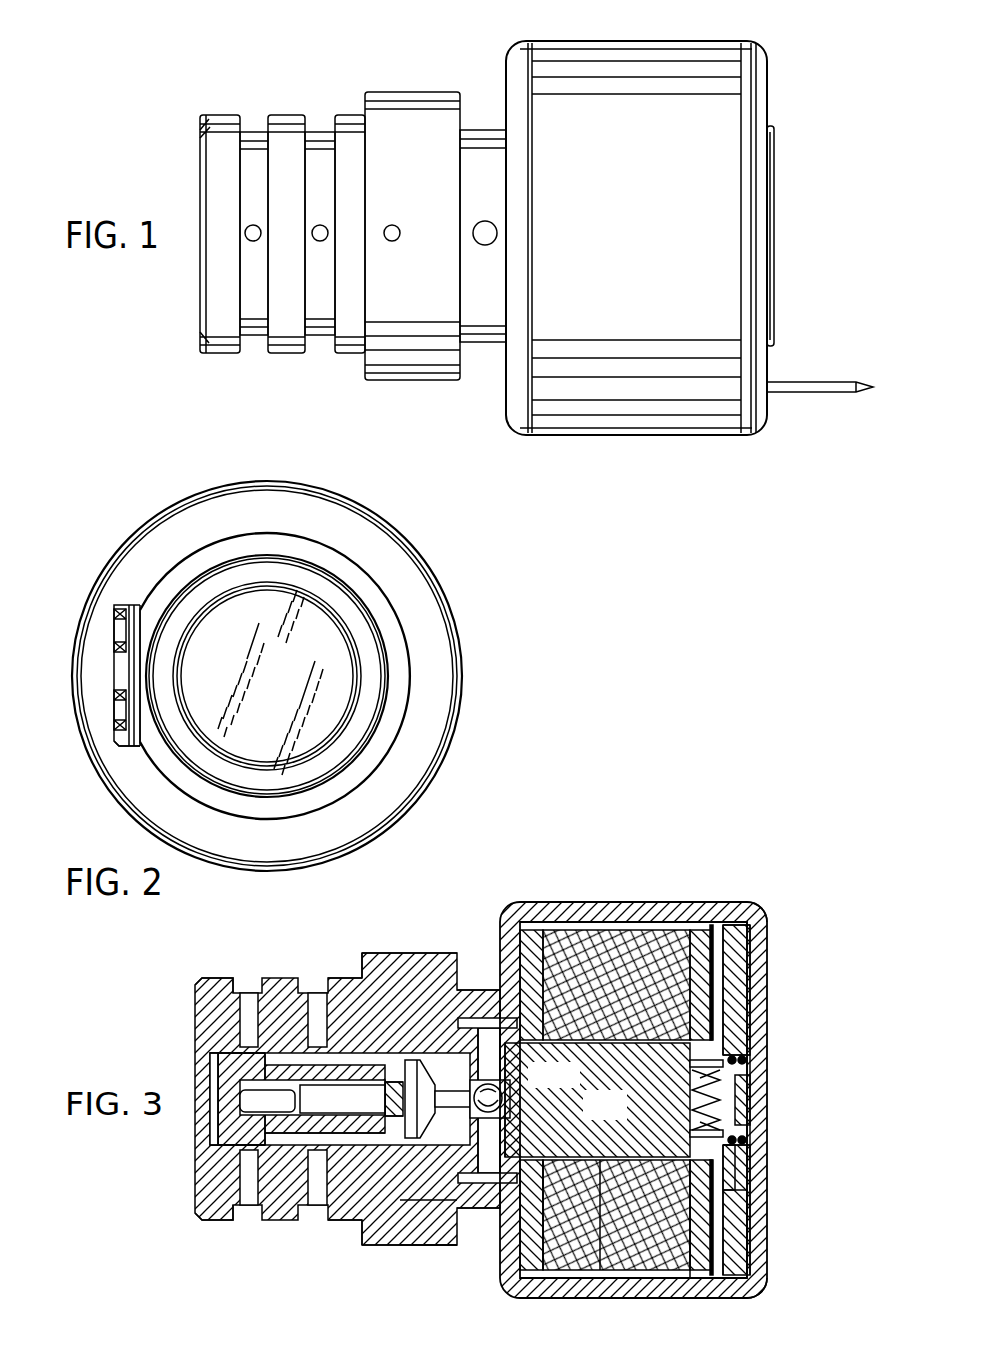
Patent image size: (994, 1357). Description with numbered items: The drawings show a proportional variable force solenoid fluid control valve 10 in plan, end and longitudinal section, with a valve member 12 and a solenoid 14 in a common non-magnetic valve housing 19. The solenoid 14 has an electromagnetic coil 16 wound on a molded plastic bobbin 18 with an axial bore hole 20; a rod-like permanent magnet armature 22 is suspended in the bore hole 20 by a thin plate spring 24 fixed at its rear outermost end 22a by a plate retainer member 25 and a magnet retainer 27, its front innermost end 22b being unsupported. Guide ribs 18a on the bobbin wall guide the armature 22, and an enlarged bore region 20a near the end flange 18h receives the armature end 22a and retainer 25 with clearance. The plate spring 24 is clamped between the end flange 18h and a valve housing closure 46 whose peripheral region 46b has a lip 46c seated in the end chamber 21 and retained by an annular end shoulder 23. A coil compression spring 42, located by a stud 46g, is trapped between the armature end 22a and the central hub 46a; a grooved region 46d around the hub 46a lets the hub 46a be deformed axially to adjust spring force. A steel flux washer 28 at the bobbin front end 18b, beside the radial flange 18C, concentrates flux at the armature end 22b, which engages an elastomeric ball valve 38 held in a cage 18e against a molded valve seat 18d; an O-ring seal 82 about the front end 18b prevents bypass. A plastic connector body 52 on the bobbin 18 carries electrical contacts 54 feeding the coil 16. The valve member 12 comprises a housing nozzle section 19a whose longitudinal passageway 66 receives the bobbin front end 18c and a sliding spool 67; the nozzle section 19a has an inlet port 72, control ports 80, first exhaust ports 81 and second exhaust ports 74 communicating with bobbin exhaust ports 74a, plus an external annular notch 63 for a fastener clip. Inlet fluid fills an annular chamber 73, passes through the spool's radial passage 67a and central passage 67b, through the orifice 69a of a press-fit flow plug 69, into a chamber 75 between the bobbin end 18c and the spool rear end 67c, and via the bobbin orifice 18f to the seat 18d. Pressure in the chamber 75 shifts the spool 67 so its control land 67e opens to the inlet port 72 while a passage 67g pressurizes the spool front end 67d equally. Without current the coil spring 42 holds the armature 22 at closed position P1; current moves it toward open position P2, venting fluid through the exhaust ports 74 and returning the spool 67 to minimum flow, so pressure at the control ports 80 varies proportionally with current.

In FIG. 1, the proportional variable force solenoid fluid control valve 10 is at (472, 442).
In FIG. 3, the proportional variable force solenoid fluid control valve 10 is at (498, 868).
In FIG. 1, the valve member 12 is at (343, 100).
In FIG. 3, the valve member 12 is at (213, 1148).
In FIG. 1, the solenoid 14 is at (597, 36).
In FIG. 3, the solenoid 14 is at (618, 896).
In FIG. 3, the electromagnetic coil 16 is at (640, 1010).
In FIG. 3, the bobbin 18 is at (768, 995).
In FIG. 3, the armature guide ribs 18a is at (507, 1212).
In FIG. 3, the front end of the bobbin 18b is at (548, 990).
In FIG. 3, the front end of the bobbin 18c is at (400, 1180).
In FIG. 3, the radial flange of the bobbin 18C is at (492, 1012).
In FIG. 3, the valve seat 18d is at (470, 1180).
In FIG. 3, the cage 18e is at (512, 1078).
In FIG. 3, the orifice of the bobbin 18f is at (410, 1010).
In FIG. 3, the end flange of the bobbin 18h is at (722, 1280).
In FIG. 1, the valve housing 19 is at (673, 429).
In FIG. 2, the valve housing 19 is at (444, 582).
In FIG. 3, the valve housing 19 is at (428, 944).
In FIG. 1, the housing nozzle section 19a is at (240, 116).
In FIG. 3, the housing nozzle section 19a is at (213, 1224).
In FIG. 3, the bore hole 20 is at (585, 1010).
In FIG. 3, the enlarged bore region 20a is at (748, 1040).
In FIG. 3, the end chamber 21 is at (710, 1272).
In FIG. 3, the permanent magnet armature 22 is at (588, 1120).
In FIG. 3, the outermost end of the armature 22a is at (712, 1112).
In FIG. 3, the innermost end of the armature 22b is at (490, 1185).
In FIG. 2, the annular end shoulder 23 is at (418, 643).
In FIG. 3, the annular end shoulder 23 is at (752, 990).
In FIG. 3, the plate spring 24 is at (718, 1225).
In FIG. 3, the plate retainer member 25 is at (745, 1190).
In FIG. 3, the magnet retainer 27 is at (718, 1132).
In FIG. 3, the flux washer 28 is at (522, 1030).
In FIG. 3, the ball valve 38 is at (438, 1062).
In FIG. 3, the coil compression spring 42 is at (716, 1112).
In FIG. 1, the valve housing closure 46 is at (779, 154).
In FIG. 2, the valve housing closure 46 is at (332, 703).
In FIG. 3, the valve housing closure 46 is at (790, 1038).
In FIG. 1, the central hub 46a is at (776, 241).
In FIG. 2, the central hub 46a is at (268, 674).
In FIG. 3, the central hub 46a is at (752, 1095).
In FIG. 3, the peripheral region 46b is at (742, 960).
In FIG. 3, the lip 46c is at (745, 935).
In FIG. 2, the grooved region 46d is at (372, 678).
In FIG. 3, the grooved region 46d is at (748, 1000).
In FIG. 3, the spring locating stud 46g is at (752, 1072).
In FIG. 2, the connector body 52 is at (106, 722).
In FIG. 1, the electrical contacts 54 is at (805, 392).
In FIG. 2, the electrical contacts 54 is at (118, 710).
In FIG. 1, the annular notch 63 is at (478, 365).
In FIG. 3, the longitudinal passageway 66 is at (214, 1055).
In FIG. 3, the spool 67 is at (232, 1130).
In FIG. 3, the radial fluid passage 67a is at (214, 1190).
In FIG. 3, the longitudinal central passage 67b is at (318, 1112).
In FIG. 3, the rear end of the spool 67c is at (380, 1068).
In FIG. 3, the front end of the spool 67d is at (232, 1068).
In FIG. 3, the annular spool control land 67e is at (310, 1180).
In FIG. 3, the passage 67g is at (215, 1056).
In FIG. 3, the flow plug 69 is at (398, 1080).
In FIG. 3, the orifice 69a is at (390, 1084).
In FIG. 1, the inlet port 72 is at (250, 236).
In FIG. 3, the inlet port 72 is at (248, 1000).
In FIG. 3, the annular chamber 73 is at (250, 1180).
In FIG. 1, the second exhaust ports 74 is at (482, 238).
In FIG. 3, the second exhaust ports 74 is at (455, 1040).
In FIG. 3, the bobbin exhaust ports 74a is at (468, 1020).
In FIG. 3, the chamber 75 is at (375, 1200).
In FIG. 1, the control ports 80 is at (318, 238).
In FIG. 3, the control ports 80 is at (312, 1195).
In FIG. 1, the first exhaust ports 81 is at (390, 238).
In FIG. 3, the first exhaust ports 81 is at (412, 1192).
In FIG. 3, the O-ring seal 82 is at (418, 1222).
In FIG. 3, the normally closed ball valve position P1 is at (540, 1175).
In FIG. 3, the ball valve open position P2 is at (600, 1272).